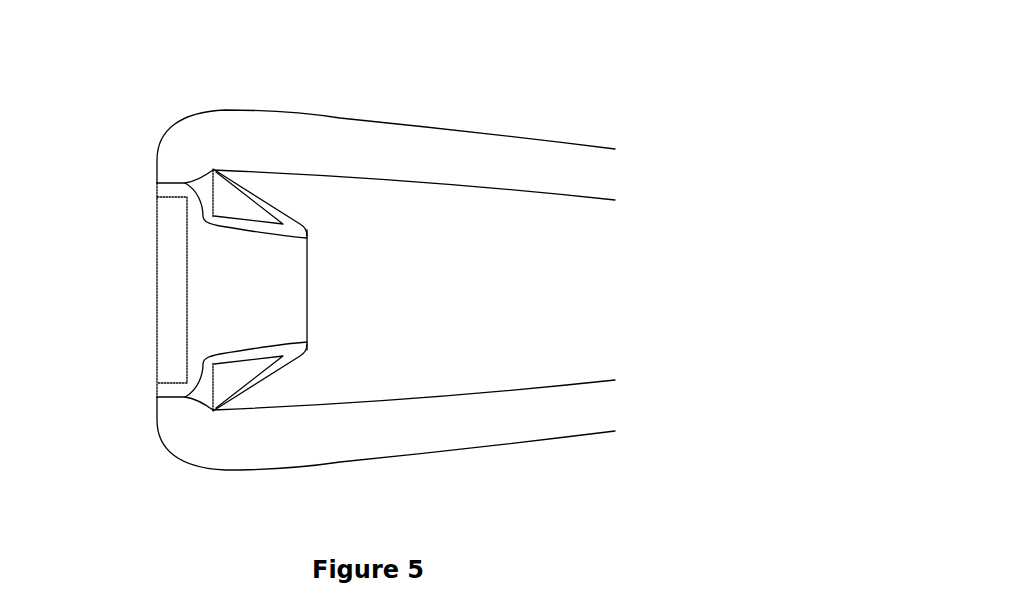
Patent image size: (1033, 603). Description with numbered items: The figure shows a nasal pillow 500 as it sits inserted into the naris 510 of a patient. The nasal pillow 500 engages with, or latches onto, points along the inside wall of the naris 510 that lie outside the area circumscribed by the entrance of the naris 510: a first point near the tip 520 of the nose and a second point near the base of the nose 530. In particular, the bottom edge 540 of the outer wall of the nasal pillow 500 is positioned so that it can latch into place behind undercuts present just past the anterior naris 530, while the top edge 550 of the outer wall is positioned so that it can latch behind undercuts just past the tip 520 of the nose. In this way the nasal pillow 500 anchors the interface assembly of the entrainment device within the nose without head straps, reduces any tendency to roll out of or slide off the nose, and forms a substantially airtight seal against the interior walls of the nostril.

The nasal pillow 500 is at (137, 230).
The naris 510 is at (540, 292).
The tip of the nose 520 is at (202, 130).
The base of the nose 530 is at (180, 437).
The bottom edge 540 is at (253, 387).
The top edge 550 is at (248, 188).